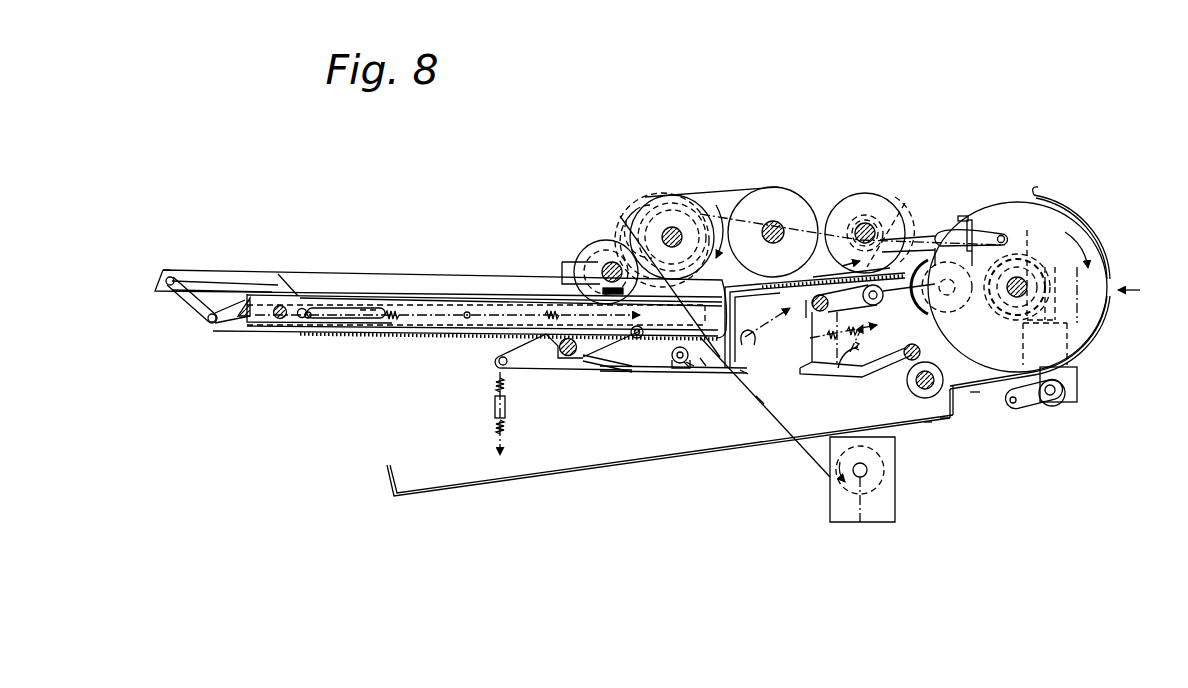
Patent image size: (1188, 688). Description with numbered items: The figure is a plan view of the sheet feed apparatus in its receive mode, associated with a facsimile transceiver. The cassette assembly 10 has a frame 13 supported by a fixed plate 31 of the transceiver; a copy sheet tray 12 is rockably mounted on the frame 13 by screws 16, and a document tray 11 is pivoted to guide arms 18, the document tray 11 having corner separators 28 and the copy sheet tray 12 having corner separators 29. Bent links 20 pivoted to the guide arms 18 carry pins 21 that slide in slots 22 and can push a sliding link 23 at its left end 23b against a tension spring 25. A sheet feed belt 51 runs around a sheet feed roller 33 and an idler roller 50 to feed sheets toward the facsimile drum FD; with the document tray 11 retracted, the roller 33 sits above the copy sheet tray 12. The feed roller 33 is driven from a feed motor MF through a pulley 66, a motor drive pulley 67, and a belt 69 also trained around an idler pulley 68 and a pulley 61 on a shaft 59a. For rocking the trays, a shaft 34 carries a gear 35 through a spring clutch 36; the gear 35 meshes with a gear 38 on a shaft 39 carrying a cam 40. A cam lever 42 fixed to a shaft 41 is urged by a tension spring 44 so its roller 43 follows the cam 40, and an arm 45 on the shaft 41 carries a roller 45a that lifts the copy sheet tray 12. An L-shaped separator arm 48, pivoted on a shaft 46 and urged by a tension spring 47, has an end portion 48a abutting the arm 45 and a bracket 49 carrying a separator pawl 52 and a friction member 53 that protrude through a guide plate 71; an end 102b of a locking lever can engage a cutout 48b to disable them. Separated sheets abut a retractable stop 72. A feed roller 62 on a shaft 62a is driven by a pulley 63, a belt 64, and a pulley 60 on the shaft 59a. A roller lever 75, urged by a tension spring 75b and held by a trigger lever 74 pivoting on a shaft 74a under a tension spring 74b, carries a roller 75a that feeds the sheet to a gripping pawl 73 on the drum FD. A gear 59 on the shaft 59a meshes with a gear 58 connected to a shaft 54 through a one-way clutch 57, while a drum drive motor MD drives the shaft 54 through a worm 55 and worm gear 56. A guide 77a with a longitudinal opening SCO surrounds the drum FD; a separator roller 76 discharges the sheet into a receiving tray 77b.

The cassette assembly 10 is at (300, 263).
The document tray 11 is at (378, 272).
The copy sheet tray 12 is at (243, 320).
The frame 13 is at (324, 326).
The screws 16 is at (280, 319).
The guide arms 18 is at (198, 312).
The bent links 20 is at (240, 276).
The pins 21 is at (300, 318).
The slots 22 is at (345, 319).
The sliding links 23 is at (418, 320).
The left end of sliding link 23b is at (372, 322).
The tension spring 25 is at (485, 334).
The corner separators 28 is at (620, 216).
The corner separators 29 is at (645, 195).
The fixed plate 31 is at (445, 341).
The sheet feed roller 33 is at (638, 185).
The shaft 34 is at (716, 190).
The gear 35 is at (656, 203).
The spring clutch 36 is at (676, 226).
The gear 38 is at (584, 262).
The shaft 39 is at (600, 269).
The cam 40 is at (637, 212).
The shaft 41 is at (578, 360).
The cam lever 42 is at (543, 370).
The roller 43 is at (582, 368).
The tension spring 44 is at (512, 430).
The arm 45 is at (640, 364).
The roller 45a is at (675, 362).
The shaft 46 is at (813, 315).
The tension spring 47 is at (757, 352).
The L-shaped separator arm 48 is at (752, 326).
The end portion of separator arm 48a is at (687, 362).
The cutout 48b is at (745, 372).
The bracket 49 is at (748, 288).
The idler roller 50 is at (778, 202).
The sheet feed belt 51 is at (730, 190).
The separator pawl 52 is at (690, 364).
The separator friction member 53 is at (752, 284).
The shaft 54 is at (1016, 300).
The worm 55 is at (1110, 312).
The worm gear 56 is at (1051, 285).
The one-way clutch 57 is at (995, 388).
The gear 58 is at (975, 398).
The gear 59 is at (868, 322).
The shaft 59a is at (945, 422).
The pulley 60 is at (968, 252).
The pulley 61 is at (928, 427).
The feed roller 62 is at (871, 195).
The shaft 62a is at (860, 225).
The pulley 63 is at (895, 197).
The belt 64 is at (932, 255).
The pulley 66 is at (440, 256).
The motor drive pulley 67 is at (876, 476).
The idler pulley 68 is at (925, 398).
The belt 69 is at (760, 400).
The guide plate 71 is at (813, 277).
The retractable stop 72 is at (884, 297).
The gripping pawl 73 is at (965, 218).
The trigger lever 74 is at (865, 380).
The shaft 74a is at (878, 366).
The tension spring 74b is at (840, 366).
The roller lever 75 is at (812, 392).
The roller 75a is at (902, 222).
The tension spring 75b is at (812, 364).
The separator roller 76 is at (1054, 406).
The guide 77a is at (1093, 244).
The receiving tray 77b is at (528, 480).
The end of locking lever 102b is at (700, 360).
The facsimile drum FD is at (1005, 203).
The drum drive motor MD is at (1080, 375).
The feed motor MF is at (893, 517).
The longitudinal opening SCO is at (1146, 289).